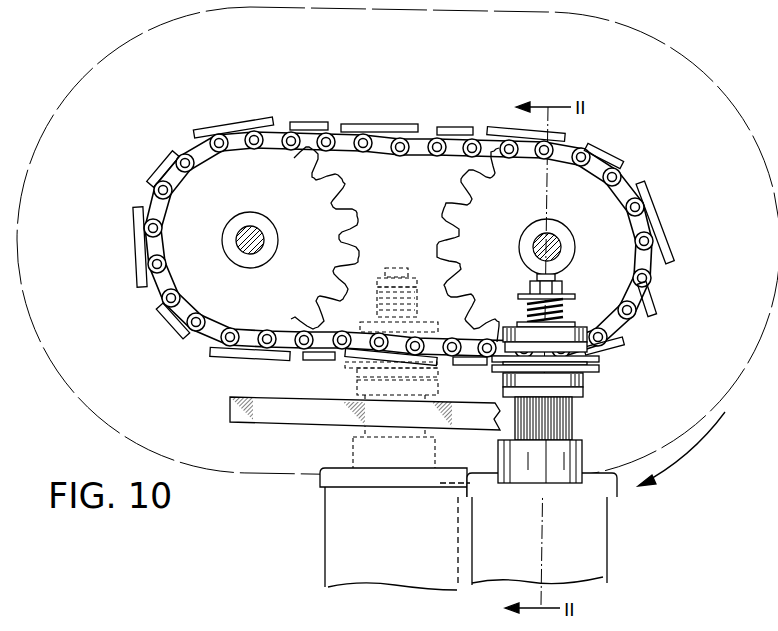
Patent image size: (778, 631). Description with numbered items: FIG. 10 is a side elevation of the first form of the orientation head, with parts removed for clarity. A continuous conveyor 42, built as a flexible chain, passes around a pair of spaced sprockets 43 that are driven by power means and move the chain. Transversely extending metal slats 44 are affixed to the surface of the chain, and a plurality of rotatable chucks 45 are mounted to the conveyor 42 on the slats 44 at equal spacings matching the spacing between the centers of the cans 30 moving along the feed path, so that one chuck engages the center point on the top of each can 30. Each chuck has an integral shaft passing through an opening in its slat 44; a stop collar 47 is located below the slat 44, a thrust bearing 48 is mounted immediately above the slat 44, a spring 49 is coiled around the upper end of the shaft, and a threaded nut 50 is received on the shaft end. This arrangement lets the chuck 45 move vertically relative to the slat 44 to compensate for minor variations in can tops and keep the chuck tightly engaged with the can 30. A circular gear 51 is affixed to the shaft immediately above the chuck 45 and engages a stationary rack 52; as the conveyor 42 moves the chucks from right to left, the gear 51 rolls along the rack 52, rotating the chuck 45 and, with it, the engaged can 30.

The can 30 is at (563, 545).
The continuous conveyor 42 is at (210, 328).
The sprocket 43 is at (337, 212).
The metal slat 44 is at (143, 257).
The chuck 45 is at (565, 465).
The stop collar 47 is at (583, 378).
The thrust bearing 48 is at (603, 339).
The spring 49 is at (568, 312).
The threaded nut 50 is at (558, 285).
The circular gear 51 is at (567, 423).
The rack 52 is at (315, 415).